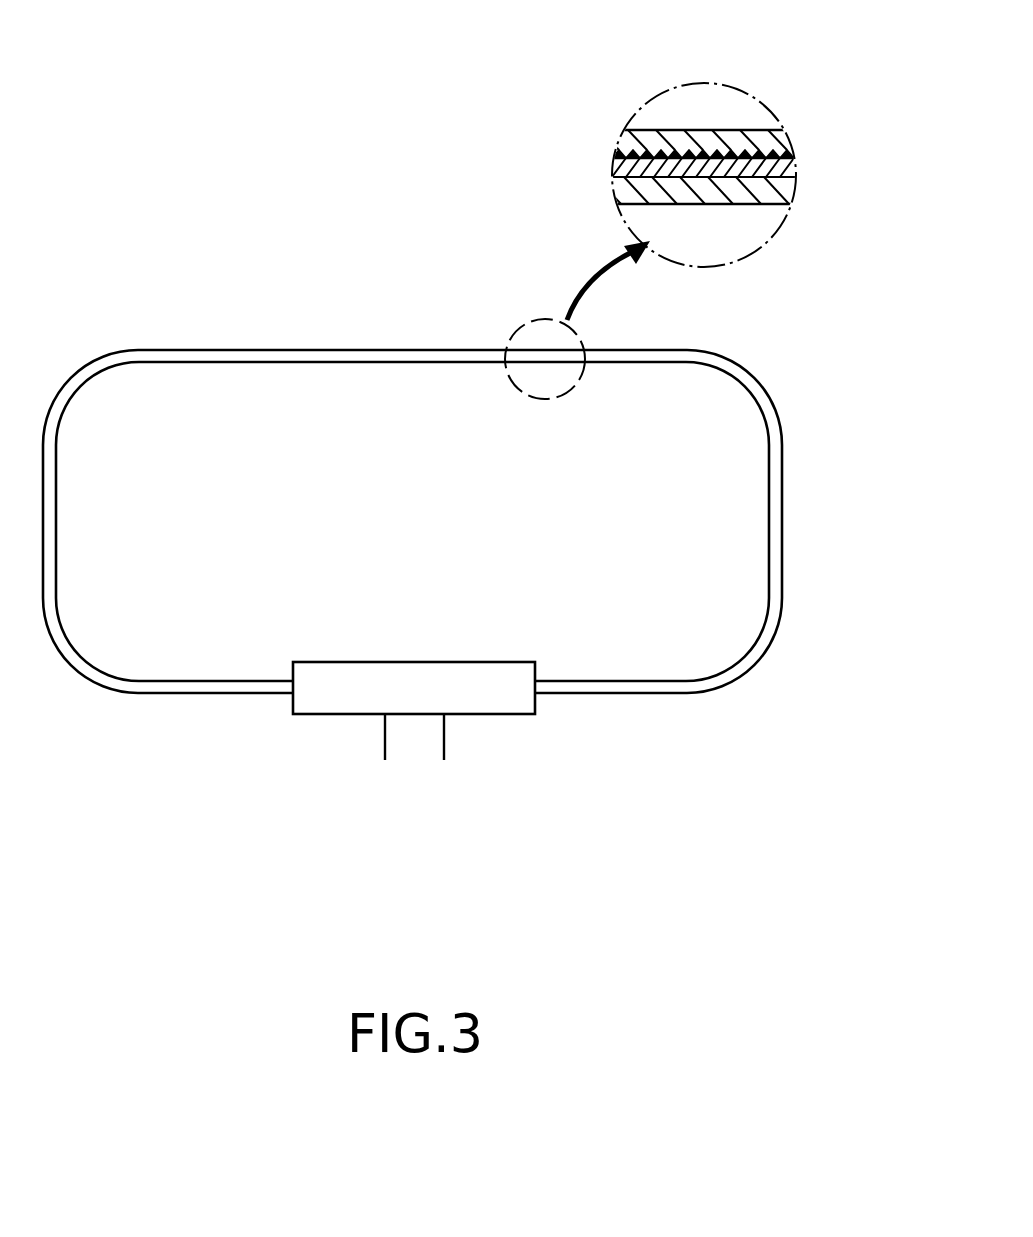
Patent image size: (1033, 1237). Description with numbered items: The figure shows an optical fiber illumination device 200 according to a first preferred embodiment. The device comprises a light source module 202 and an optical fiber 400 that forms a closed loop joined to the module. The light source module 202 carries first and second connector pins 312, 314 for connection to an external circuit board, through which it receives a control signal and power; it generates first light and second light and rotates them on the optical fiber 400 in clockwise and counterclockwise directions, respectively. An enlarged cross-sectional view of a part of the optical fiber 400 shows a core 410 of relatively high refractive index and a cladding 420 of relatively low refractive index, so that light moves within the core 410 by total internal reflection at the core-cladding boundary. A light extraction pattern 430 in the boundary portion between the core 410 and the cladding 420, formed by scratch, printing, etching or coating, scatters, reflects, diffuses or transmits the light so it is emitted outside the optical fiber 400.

The optical fiber illumination device 200 is at (412, 560).
The light source module 202 is at (465, 645).
The first connector pin 312 is at (384, 745).
The second connector pin 314 is at (445, 745).
The optical fiber 400 is at (622, 660).
The core 410 is at (794, 167).
The cladding 420 is at (694, 140).
The light extraction pattern 430 is at (733, 152).